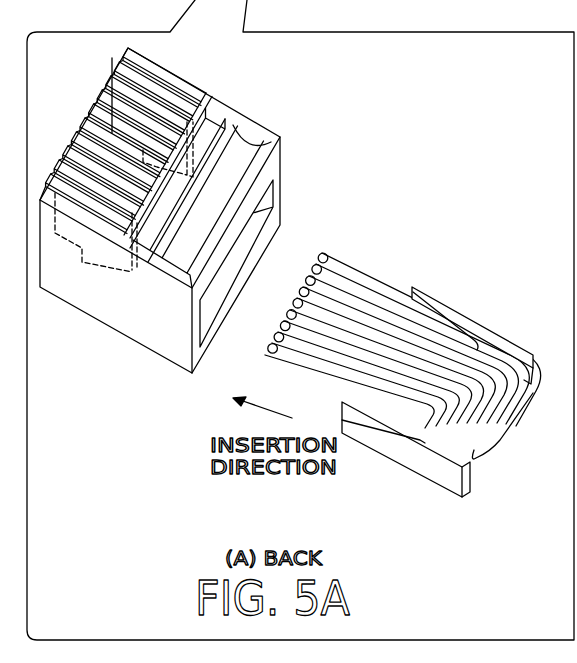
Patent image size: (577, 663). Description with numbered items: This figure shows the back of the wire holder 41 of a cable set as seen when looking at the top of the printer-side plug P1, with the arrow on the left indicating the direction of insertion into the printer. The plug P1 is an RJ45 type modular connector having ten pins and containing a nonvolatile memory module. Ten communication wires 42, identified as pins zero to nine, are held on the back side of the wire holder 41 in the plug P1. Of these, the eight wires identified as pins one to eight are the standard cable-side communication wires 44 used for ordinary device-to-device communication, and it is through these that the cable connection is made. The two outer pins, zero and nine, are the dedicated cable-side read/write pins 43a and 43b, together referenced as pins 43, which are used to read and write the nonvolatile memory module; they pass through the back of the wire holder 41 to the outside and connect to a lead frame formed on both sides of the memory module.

The communication wires 42 is at (322, 242).
The plug P1 is at (270, 136).
The dedicated cable-side read/write pins 43 is at (410, 363).
The dedicated cable-side read/write pin 43a is at (353, 272).
The dedicated cable-side read/write pin 43b is at (398, 430).
The cable-side communication wires 44 is at (540, 395).
The wire holder 41 is at (443, 480).